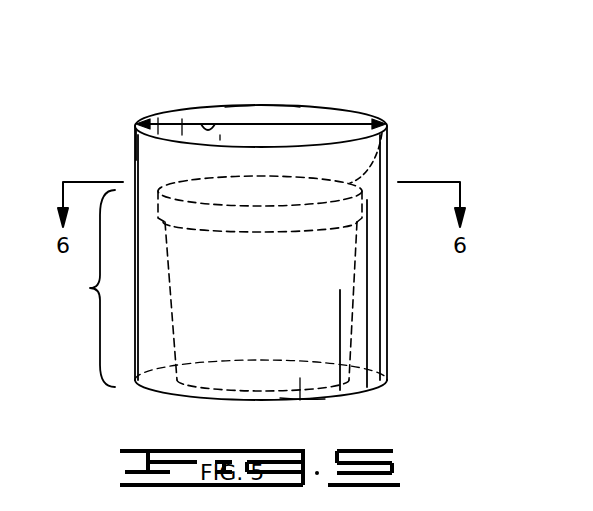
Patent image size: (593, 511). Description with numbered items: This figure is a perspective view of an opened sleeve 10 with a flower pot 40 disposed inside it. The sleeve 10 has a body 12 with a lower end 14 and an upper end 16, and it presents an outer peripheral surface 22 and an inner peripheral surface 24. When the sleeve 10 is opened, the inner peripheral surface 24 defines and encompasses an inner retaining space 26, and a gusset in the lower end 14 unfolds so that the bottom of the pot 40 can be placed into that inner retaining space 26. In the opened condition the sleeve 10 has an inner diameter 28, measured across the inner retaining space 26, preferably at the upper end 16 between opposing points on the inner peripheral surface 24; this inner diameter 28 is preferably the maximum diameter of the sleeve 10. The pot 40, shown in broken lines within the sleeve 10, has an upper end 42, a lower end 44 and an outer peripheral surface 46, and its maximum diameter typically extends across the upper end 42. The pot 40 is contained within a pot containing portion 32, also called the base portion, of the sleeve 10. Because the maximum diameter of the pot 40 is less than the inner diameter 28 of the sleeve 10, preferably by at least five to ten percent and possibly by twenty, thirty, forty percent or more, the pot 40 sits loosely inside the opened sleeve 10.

The sleeve 10 is at (363, 106).
The body 12 is at (389, 322).
The lower end 14 is at (223, 190).
The upper end 16 is at (300, 104).
The outer peripheral surface 22 is at (136, 141).
The inner peripheral surface 24 is at (243, 112).
The inner retaining space 26 is at (279, 106).
The inner diameter 28 is at (200, 124).
The pot containing portion 32 is at (80, 292).
The pot 40 is at (350, 290).
The upper end 42 is at (389, 143).
The lower end 44 is at (320, 400).
The outer peripheral surface 46 is at (355, 260).